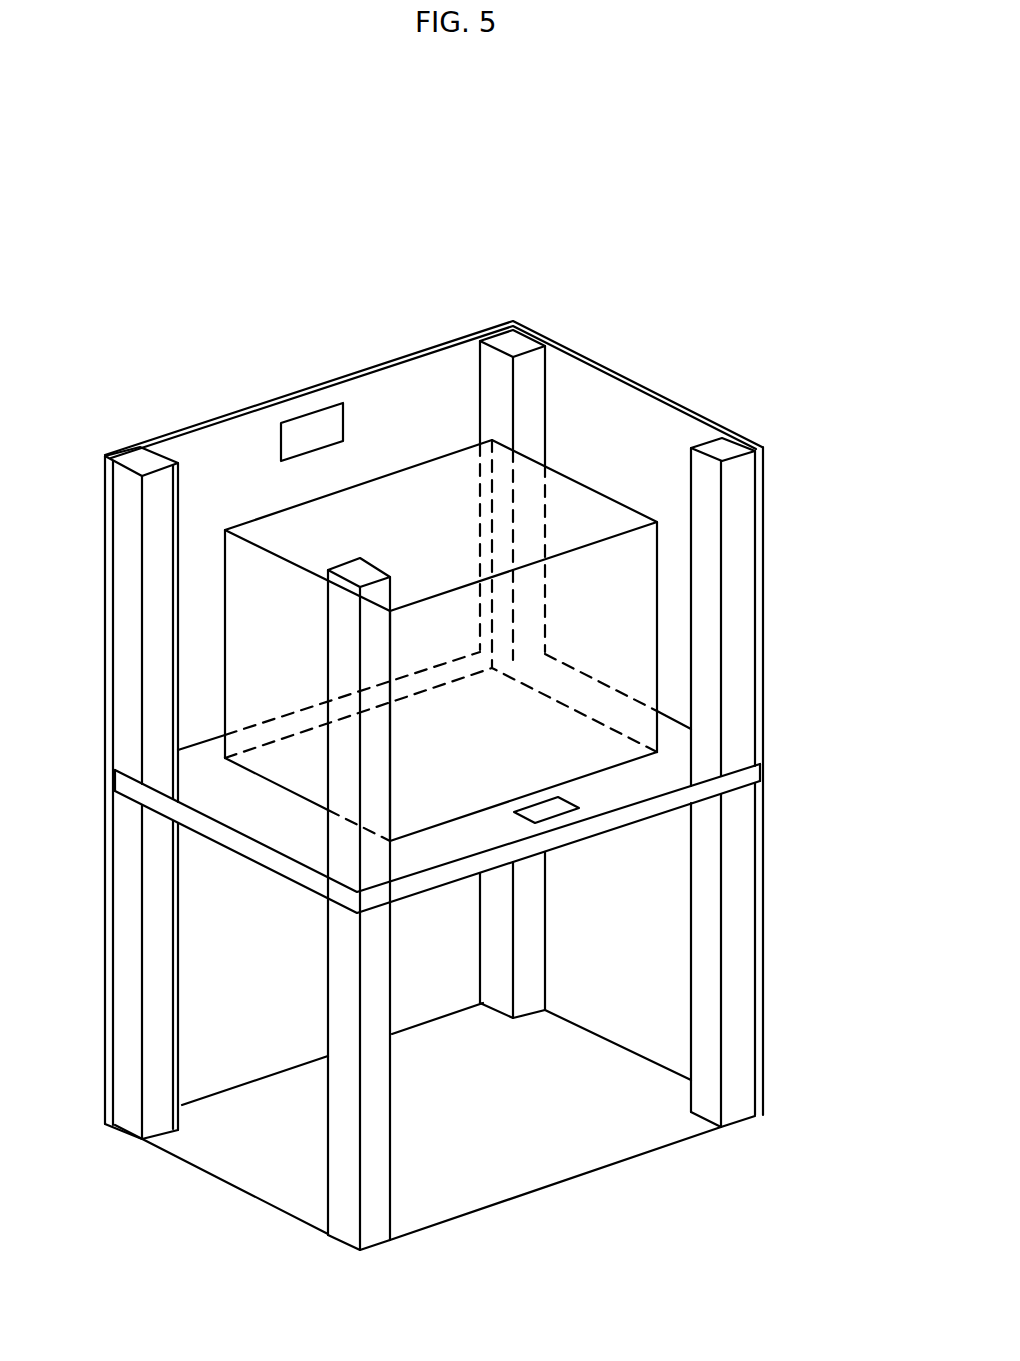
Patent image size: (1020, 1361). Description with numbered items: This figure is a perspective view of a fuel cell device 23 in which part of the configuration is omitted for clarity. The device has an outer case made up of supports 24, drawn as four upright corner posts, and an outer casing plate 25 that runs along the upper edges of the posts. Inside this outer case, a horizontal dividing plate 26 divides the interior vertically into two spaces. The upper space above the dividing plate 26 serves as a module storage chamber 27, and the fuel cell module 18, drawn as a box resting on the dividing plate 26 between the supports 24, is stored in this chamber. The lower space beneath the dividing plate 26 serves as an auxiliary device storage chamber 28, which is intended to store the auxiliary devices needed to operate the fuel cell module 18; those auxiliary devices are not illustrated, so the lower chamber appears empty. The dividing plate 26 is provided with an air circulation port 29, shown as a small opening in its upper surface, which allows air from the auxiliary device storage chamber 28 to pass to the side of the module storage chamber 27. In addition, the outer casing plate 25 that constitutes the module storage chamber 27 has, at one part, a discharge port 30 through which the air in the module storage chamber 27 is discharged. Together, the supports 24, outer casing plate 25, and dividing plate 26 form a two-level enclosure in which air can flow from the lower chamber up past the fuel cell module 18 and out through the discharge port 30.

The fuel cell device 23 is at (358, 250).
The support 24 is at (140, 457).
The outer casing plate 25 is at (566, 346).
The dividing plate 26 is at (740, 773).
The module storage chamber 27 is at (595, 420).
The fuel cell module 18 is at (583, 507).
The auxiliary device storage chamber 28 is at (232, 965).
The air circulation port 29 is at (556, 806).
The discharge port 30 is at (303, 430).